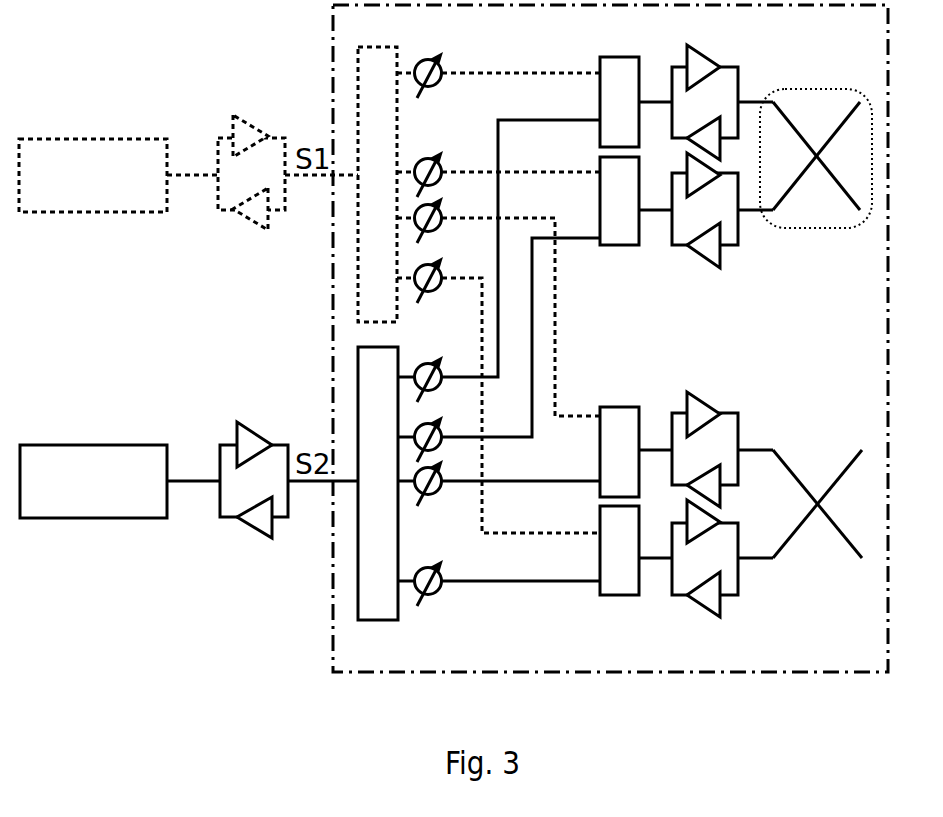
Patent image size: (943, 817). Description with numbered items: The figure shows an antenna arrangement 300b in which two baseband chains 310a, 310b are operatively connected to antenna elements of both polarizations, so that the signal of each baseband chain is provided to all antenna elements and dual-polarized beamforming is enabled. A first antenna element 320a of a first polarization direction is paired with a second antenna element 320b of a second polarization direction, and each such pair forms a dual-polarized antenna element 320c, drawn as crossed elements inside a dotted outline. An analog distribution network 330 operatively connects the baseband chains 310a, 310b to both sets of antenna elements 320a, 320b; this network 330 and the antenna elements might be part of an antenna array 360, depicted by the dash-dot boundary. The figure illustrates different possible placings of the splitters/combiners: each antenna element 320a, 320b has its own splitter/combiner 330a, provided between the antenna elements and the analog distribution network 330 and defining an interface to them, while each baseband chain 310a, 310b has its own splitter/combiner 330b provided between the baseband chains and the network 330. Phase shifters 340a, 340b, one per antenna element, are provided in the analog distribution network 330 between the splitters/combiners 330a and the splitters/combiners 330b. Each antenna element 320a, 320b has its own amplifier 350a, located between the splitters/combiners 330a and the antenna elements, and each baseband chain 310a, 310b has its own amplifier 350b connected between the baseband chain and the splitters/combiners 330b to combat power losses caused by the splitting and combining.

The antenna arrangement 300b is at (224, 88).
The baseband chain 310a is at (98, 212).
The baseband chain 310b is at (97, 518).
The amplifier 350b is at (232, 518).
The phase shifter 340a is at (423, 20).
The phase shifter 340b is at (418, 576).
The analog distribution network 330 is at (541, 317).
The splitter/combiner 330a is at (620, 245).
The splitter/combiner 330b is at (398, 612).
The amplifier 350a is at (680, 592).
The antenna element of the first set 320a is at (833, 130).
The antenna element of the second set 320b is at (838, 190).
The dual-polarized antenna element 320c is at (870, 217).
The antenna array 360 is at (875, 662).